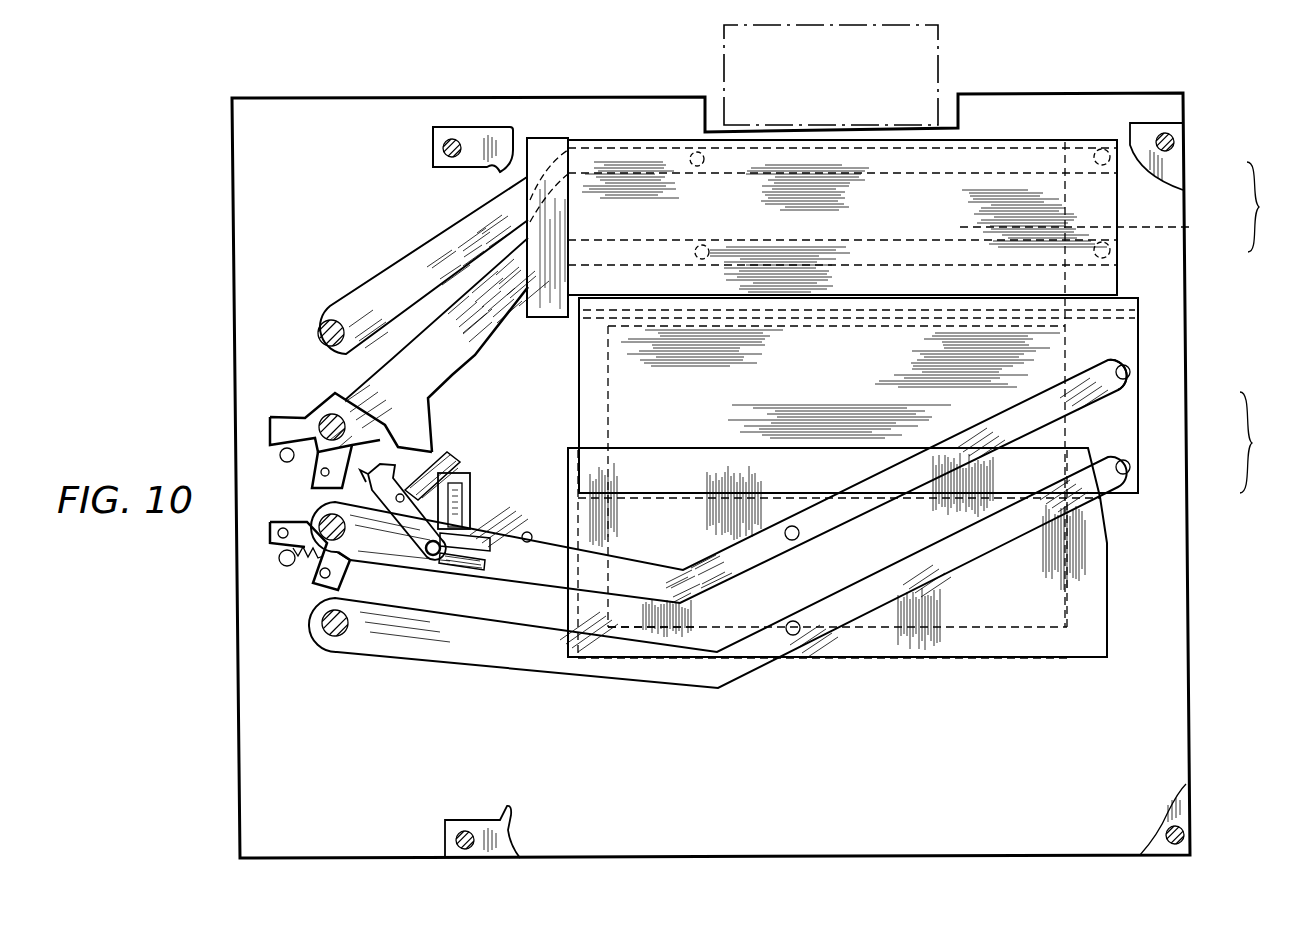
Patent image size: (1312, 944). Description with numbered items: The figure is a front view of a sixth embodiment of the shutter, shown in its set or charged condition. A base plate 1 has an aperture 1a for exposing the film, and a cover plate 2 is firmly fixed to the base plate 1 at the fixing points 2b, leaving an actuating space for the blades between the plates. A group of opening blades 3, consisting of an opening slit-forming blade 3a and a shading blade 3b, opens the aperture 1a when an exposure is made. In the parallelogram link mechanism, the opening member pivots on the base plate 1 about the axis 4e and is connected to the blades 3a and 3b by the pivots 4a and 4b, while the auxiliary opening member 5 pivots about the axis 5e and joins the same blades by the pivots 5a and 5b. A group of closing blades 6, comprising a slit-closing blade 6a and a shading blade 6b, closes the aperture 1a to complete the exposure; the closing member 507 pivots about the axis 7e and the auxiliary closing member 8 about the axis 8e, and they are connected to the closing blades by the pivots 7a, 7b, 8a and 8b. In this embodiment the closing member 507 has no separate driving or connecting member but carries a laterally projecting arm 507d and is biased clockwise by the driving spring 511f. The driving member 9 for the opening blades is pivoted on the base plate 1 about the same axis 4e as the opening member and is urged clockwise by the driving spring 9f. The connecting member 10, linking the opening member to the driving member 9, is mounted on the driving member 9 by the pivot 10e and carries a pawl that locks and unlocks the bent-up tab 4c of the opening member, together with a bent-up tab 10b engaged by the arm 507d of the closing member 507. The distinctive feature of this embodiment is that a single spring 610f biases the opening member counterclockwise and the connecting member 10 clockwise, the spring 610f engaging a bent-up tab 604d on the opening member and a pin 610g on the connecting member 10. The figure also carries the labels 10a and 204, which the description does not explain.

The base plate 1 is at (1178, 695).
The aperture 1a is at (996, 627).
The cover plate 2 is at (1188, 797).
The fixing points 2b is at (445, 148).
The group of opening blades 3 is at (1254, 442).
The opening slit-forming blade 3a is at (1140, 437).
The shading blade 3b is at (1135, 448).
The pivot 4a is at (1120, 385).
The pivot 4b is at (792, 540).
The bent-up tab 4c is at (470, 473).
The axis 4e is at (318, 543).
The auxiliary opening member 5 is at (1018, 527).
The pivot 5a is at (1130, 493).
The pivot 5b is at (788, 622).
The axis 5e is at (320, 628).
The group of closing blades 6 is at (902, 227).
The slit-closing blade 6a is at (1117, 205).
The shading blade 6b is at (1096, 227).
The pivot 7a is at (1110, 256).
The pivot 7b is at (699, 245).
The axis 7e is at (355, 410).
The auxiliary closing member 8 is at (383, 282).
The pivot 8a is at (1102, 148).
The pivot 8b is at (697, 167).
The axis 8e is at (322, 320).
The driving member 9 is at (368, 540).
The driving spring 9f is at (262, 548).
The connecting member 10 is at (418, 542).
The lever end 10a is at (445, 458).
The bent-up tab 10b is at (327, 489).
The pivot 10e is at (437, 558).
The arm end 204 is at (1098, 375).
The closing member 507 is at (352, 392).
The laterally projecting arm 507d is at (450, 380).
The driving spring 511f is at (265, 445).
The bent-up tab 604d is at (505, 515).
The spring 610f is at (451, 563).
The pin 610g is at (448, 462).